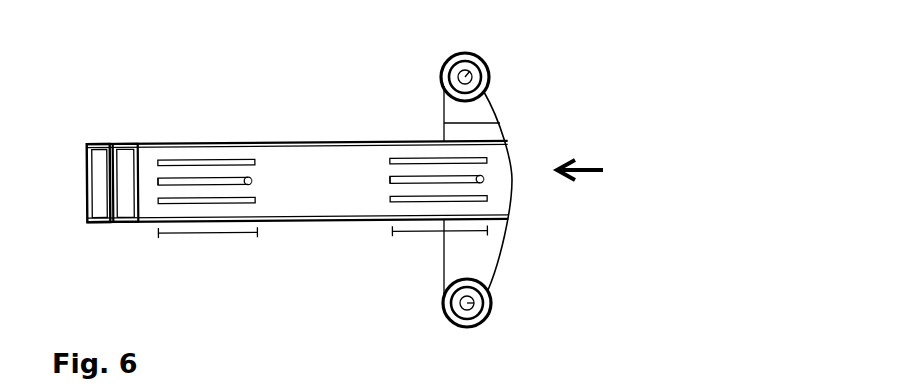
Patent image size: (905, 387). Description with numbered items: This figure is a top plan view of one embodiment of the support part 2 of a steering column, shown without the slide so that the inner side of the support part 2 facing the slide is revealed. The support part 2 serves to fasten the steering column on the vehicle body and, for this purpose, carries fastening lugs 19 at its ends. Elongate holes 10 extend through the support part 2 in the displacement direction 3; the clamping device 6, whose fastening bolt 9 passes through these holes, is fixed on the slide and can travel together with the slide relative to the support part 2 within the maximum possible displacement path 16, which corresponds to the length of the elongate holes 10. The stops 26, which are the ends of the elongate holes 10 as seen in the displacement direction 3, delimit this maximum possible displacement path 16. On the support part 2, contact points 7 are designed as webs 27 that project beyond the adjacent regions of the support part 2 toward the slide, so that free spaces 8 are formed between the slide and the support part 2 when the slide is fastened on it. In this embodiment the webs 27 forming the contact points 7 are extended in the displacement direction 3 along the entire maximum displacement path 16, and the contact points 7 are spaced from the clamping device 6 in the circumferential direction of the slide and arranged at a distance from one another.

The support part 2 is at (269, 141).
The displacement direction 3 is at (598, 168).
The clamping device 6 is at (397, 224).
The fastening bolt 9 is at (248, 187).
The contact point 7 is at (353, 184).
The web 27 is at (216, 161).
The free space 8 is at (393, 191).
The elongate hole 10 is at (177, 180).
The maximum possible displacement path 16 is at (177, 237).
The fastening lug 19 is at (101, 141).
The stop 26 is at (159, 186).